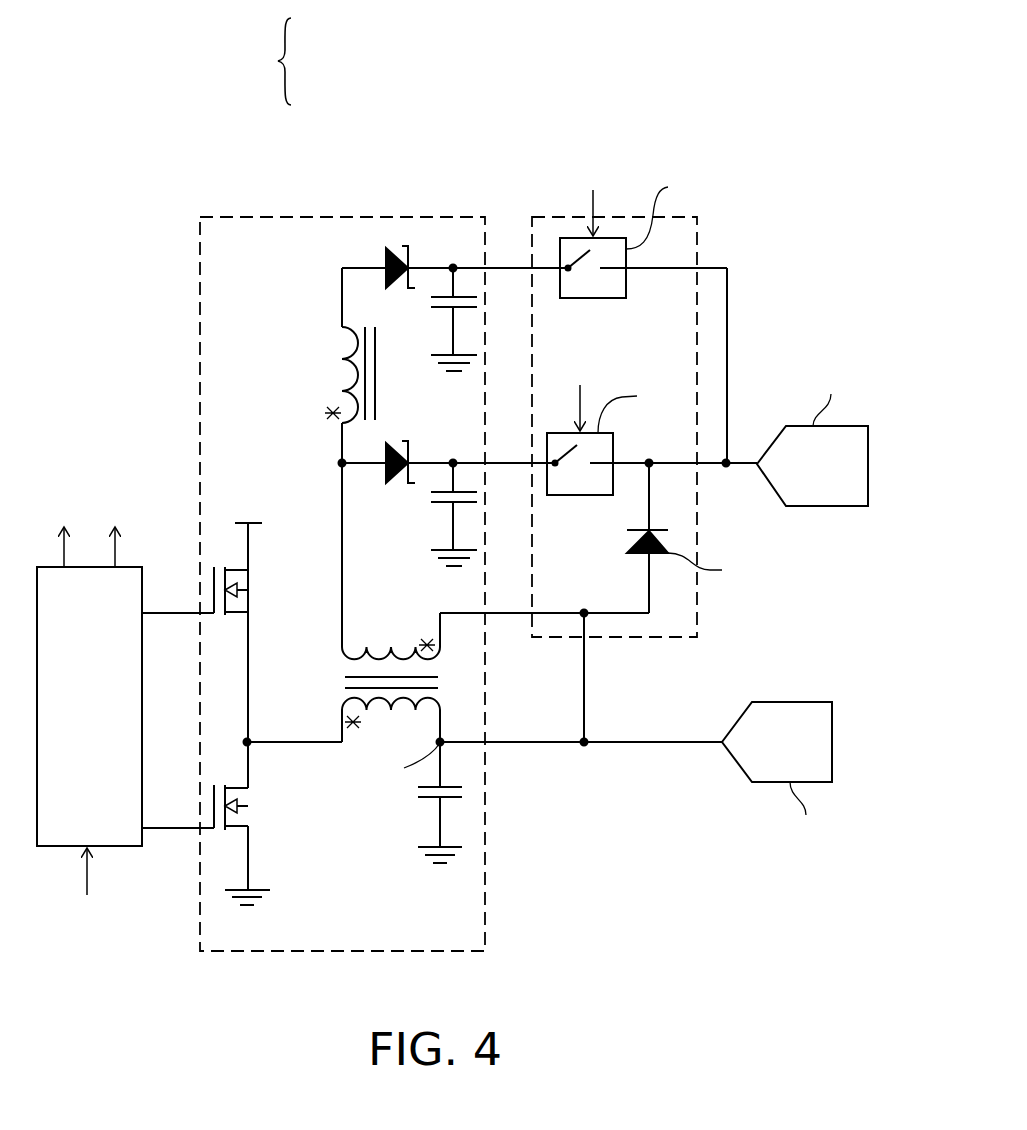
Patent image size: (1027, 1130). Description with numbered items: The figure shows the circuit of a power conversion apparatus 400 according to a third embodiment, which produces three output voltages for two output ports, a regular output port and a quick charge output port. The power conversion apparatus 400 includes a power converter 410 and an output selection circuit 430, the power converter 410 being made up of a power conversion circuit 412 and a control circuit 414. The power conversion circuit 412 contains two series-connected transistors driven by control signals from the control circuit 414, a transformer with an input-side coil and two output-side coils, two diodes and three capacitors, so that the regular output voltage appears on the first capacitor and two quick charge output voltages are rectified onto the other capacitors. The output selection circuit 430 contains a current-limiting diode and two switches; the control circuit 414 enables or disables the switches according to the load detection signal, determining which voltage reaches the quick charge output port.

The power conversion apparatus 400 is at (721, 967).
The power converter 410 is at (103, 28).
The power conversion circuit 412 is at (283, 216).
The control circuit 414 is at (126, 846).
The output selection circuit 430 is at (697, 257).